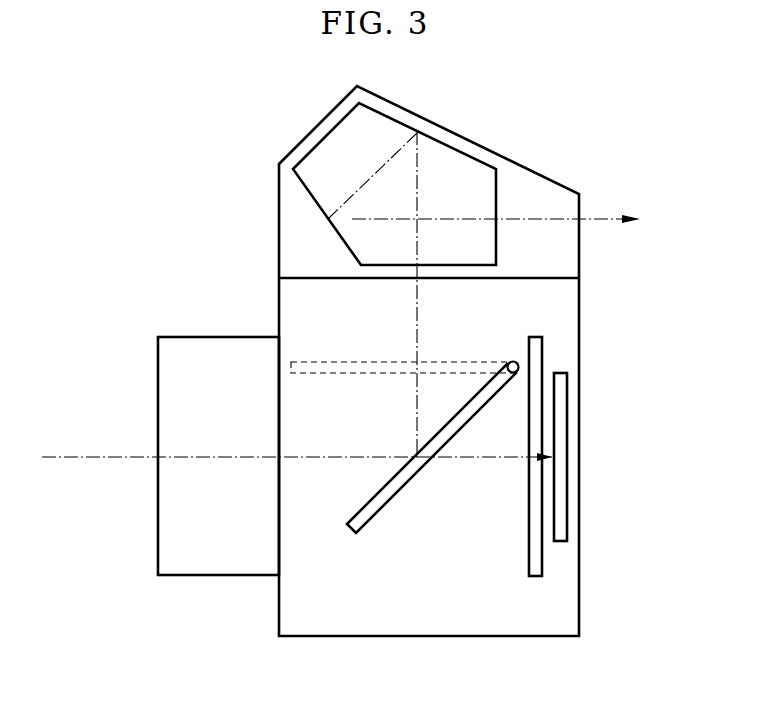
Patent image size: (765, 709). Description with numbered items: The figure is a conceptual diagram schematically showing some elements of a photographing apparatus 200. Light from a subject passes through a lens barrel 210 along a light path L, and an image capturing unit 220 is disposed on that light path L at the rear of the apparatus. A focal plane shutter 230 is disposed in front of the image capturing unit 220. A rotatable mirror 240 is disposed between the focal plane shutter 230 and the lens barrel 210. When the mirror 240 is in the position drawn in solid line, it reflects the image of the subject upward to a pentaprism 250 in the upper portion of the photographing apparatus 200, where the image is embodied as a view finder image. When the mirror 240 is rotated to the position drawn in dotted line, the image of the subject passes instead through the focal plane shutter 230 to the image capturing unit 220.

The photographing apparatus 200 is at (552, 113).
The lens barrel 210 is at (210, 567).
The image capturing unit 220 is at (563, 397).
The focal plane shutter 230 is at (537, 566).
The rotatable mirror 240 is at (365, 518).
The pentaprism 250 is at (450, 165).
The light path L is at (91, 455).